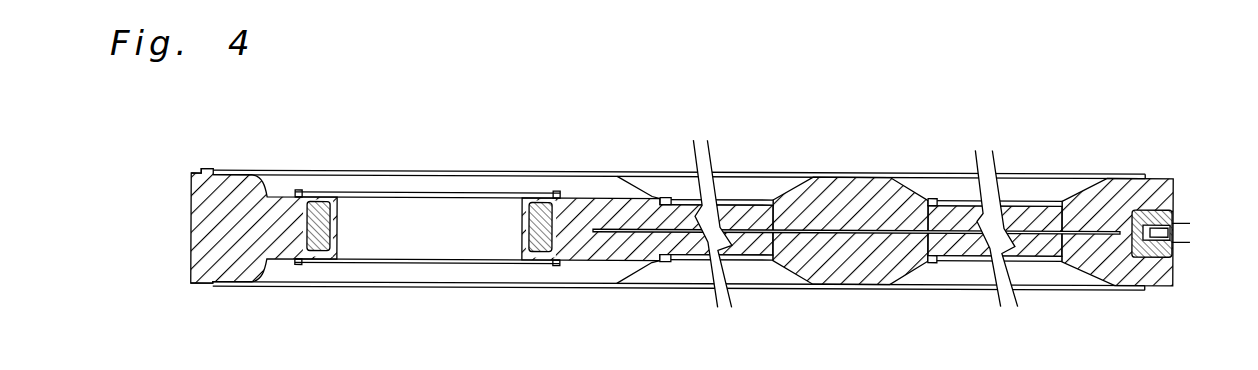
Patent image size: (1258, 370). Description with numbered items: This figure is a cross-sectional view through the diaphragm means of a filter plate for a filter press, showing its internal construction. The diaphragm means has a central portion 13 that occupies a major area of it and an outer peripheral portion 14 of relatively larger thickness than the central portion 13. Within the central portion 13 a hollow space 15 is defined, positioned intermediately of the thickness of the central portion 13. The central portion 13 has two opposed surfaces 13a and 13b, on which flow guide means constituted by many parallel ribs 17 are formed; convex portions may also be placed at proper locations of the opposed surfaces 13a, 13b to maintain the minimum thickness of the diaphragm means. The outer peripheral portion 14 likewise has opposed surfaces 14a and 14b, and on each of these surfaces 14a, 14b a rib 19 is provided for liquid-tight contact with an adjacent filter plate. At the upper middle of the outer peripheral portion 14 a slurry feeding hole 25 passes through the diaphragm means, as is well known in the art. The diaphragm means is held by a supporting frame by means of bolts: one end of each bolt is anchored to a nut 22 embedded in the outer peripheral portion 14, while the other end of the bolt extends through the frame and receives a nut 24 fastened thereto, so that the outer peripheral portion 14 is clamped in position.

The central portion 13 is at (689, 185).
The opposed surface of the central portion 13a is at (670, 196).
The opposed surface of the central portion 13b is at (677, 256).
The outer peripheral portion 14 is at (224, 260).
The opposed surface of the outer peripheral portion 14a is at (206, 168).
The opposed surface of the outer peripheral portion 14b is at (206, 285).
The hollow space 15 is at (836, 226).
The parallel ribs 17 is at (742, 197).
The rib 19 is at (218, 169).
The nut 22 is at (1157, 204).
The nut 24 is at (1188, 219).
The slurry feeding hole 25 is at (424, 203).